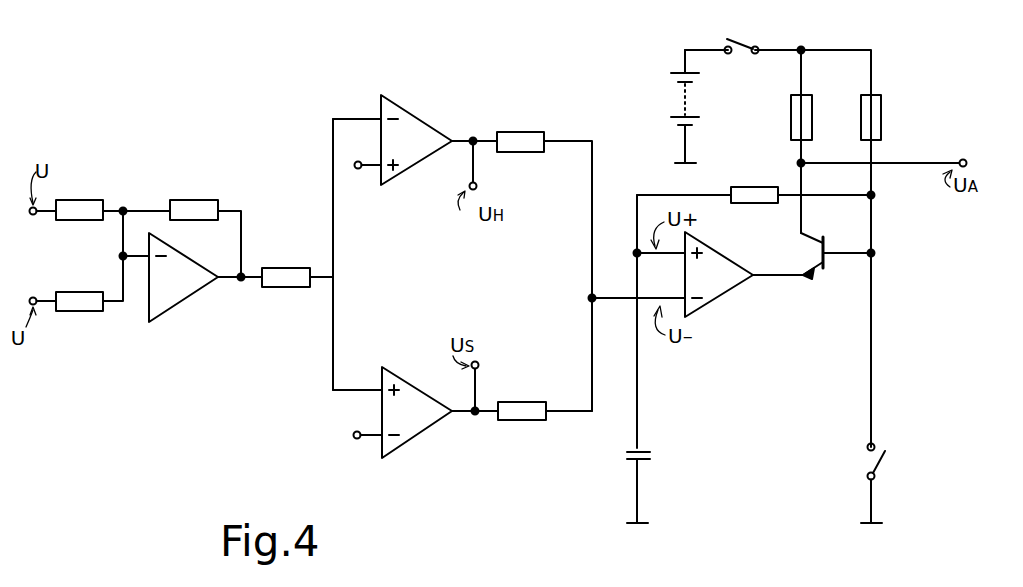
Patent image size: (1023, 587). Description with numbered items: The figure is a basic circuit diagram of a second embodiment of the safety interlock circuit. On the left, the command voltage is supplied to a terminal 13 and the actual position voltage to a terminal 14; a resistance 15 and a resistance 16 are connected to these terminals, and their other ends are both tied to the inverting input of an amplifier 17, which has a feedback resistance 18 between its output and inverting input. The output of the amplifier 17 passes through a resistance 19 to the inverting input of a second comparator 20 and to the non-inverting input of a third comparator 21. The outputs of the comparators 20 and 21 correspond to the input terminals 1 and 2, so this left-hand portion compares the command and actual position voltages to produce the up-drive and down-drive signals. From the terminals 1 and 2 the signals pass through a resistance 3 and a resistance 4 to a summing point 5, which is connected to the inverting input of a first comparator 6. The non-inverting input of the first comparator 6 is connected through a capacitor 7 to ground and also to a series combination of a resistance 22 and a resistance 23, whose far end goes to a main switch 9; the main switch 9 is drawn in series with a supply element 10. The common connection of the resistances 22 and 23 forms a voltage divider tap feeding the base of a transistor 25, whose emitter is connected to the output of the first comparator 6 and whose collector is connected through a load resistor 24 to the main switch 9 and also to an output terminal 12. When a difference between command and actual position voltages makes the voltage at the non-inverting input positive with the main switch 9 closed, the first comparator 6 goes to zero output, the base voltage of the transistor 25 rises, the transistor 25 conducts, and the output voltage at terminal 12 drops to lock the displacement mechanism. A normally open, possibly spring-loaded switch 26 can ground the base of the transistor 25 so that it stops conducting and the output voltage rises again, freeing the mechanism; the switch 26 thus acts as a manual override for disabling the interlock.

The input terminal 1 is at (477, 186).
The input terminal 2 is at (478, 363).
The resistance 3 is at (517, 131).
The resistance 4 is at (516, 400).
The summing point 5 is at (589, 298).
The first comparator 6 is at (720, 286).
The capacitor 7 is at (652, 455).
The main switch 9 is at (745, 47).
The battery 10 is at (678, 99).
The output terminal 12 is at (965, 158).
The terminal 13 is at (38, 230).
The terminal 14 is at (36, 298).
The resistance 15 is at (106, 198).
The resistance 16 is at (88, 310).
The amplifier 17 is at (183, 292).
The resistance 18 is at (195, 198).
The resistance 19 is at (288, 288).
The second comparator 20 is at (415, 122).
The third comparator 21 is at (425, 418).
The resistance 22 is at (752, 186).
The resistance 23 is at (877, 117).
The load resistor 24 is at (790, 120).
The transistor 25 is at (818, 253).
The switch 26 is at (887, 467).